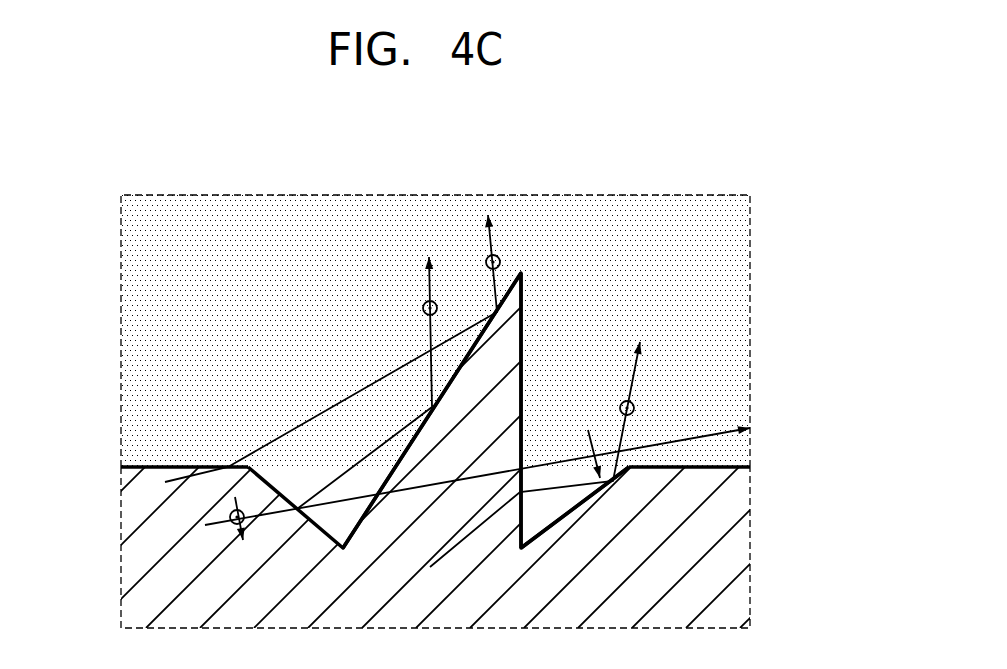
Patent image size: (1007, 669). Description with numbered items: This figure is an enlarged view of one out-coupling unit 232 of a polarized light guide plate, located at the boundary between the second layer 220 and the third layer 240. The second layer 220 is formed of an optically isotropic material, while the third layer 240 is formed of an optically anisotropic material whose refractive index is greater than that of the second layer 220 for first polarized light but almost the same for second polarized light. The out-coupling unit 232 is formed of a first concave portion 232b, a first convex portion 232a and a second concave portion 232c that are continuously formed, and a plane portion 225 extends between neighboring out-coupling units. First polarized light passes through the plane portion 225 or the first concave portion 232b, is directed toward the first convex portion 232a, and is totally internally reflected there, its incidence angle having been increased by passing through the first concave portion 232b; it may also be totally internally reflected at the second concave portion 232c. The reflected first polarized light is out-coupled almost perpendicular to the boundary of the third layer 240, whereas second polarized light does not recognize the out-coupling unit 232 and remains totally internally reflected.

The second layer 220 is at (143, 557).
The plane portion 225 is at (148, 465).
The out-coupling unit 232 is at (842, 330).
The first convex portion 232a is at (540, 317).
The first concave portion 232b is at (389, 521).
The second concave portion 232c is at (595, 513).
The third layer 240 is at (143, 342).